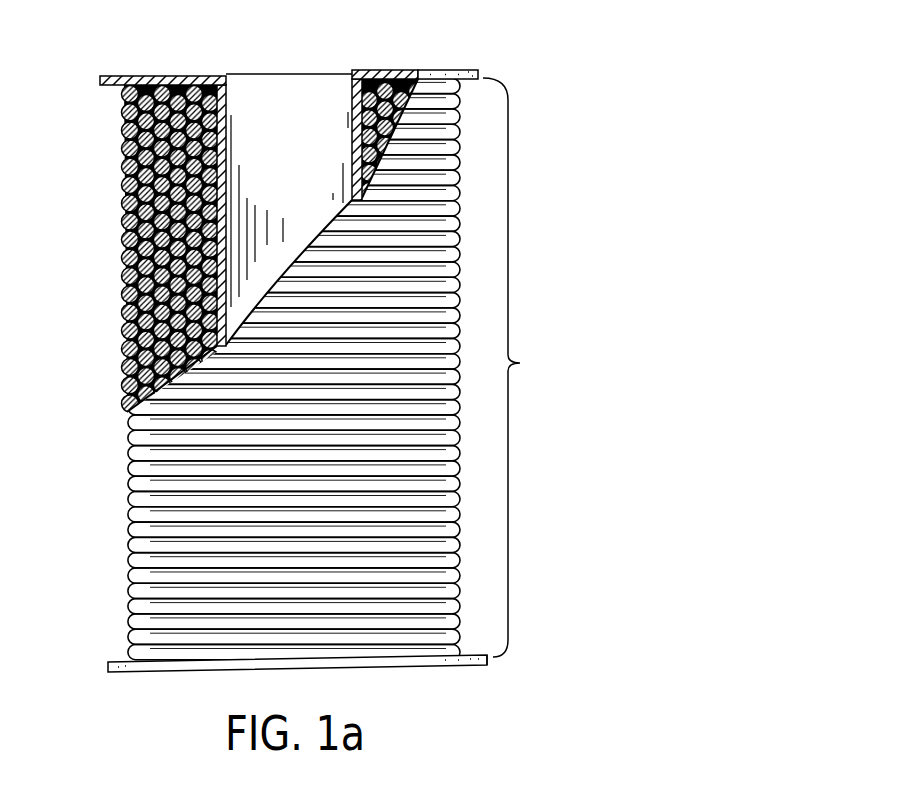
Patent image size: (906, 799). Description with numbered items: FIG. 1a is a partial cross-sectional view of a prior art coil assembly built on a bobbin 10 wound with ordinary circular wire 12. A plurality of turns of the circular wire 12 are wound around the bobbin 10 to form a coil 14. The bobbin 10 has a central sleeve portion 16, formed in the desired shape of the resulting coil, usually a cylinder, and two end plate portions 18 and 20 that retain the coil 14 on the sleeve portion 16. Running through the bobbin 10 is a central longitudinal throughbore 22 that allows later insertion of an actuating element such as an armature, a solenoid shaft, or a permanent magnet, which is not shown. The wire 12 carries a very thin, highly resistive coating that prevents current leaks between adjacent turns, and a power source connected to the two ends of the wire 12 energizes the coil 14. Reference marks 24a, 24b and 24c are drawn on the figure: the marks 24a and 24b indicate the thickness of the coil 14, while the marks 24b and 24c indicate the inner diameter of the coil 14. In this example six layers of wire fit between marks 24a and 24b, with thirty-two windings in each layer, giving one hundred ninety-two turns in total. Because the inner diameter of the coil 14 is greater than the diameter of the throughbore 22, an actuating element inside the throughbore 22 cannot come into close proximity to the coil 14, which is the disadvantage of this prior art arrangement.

The bobbin 10 is at (110, 667).
The circular wire 12 is at (120, 255).
The coil 14 is at (516, 367).
The central sleeve portion 16 is at (100, 78).
The end plate portion 18 is at (187, 75).
The end plate portion 20 is at (468, 666).
The central longitudinal throughbore 22 is at (344, 112).
The reference mark 24a is at (125, 59).
The reference mark 24b is at (220, 59).
The reference mark 24c is at (364, 55).